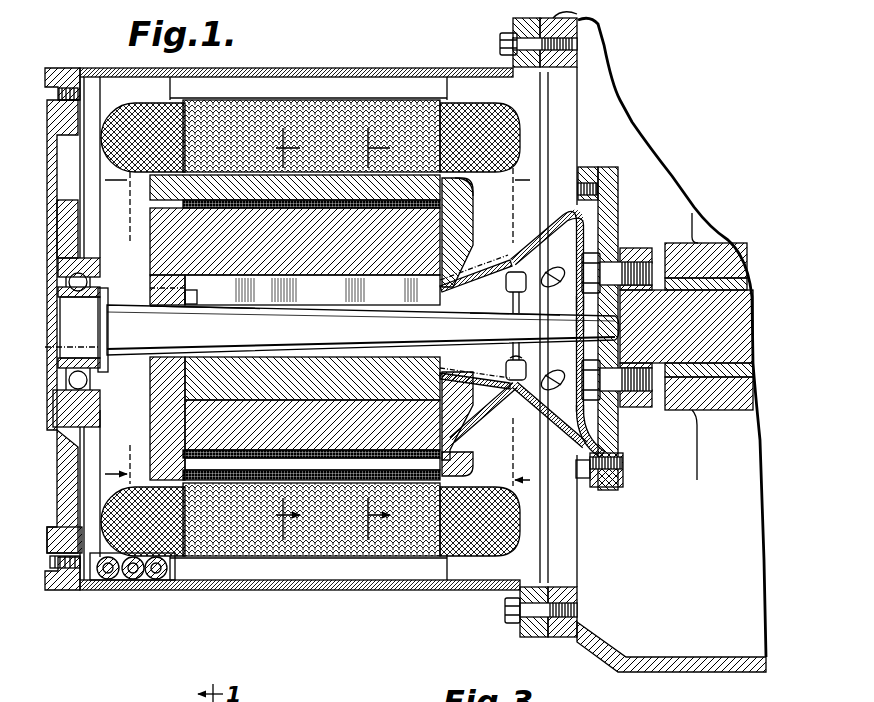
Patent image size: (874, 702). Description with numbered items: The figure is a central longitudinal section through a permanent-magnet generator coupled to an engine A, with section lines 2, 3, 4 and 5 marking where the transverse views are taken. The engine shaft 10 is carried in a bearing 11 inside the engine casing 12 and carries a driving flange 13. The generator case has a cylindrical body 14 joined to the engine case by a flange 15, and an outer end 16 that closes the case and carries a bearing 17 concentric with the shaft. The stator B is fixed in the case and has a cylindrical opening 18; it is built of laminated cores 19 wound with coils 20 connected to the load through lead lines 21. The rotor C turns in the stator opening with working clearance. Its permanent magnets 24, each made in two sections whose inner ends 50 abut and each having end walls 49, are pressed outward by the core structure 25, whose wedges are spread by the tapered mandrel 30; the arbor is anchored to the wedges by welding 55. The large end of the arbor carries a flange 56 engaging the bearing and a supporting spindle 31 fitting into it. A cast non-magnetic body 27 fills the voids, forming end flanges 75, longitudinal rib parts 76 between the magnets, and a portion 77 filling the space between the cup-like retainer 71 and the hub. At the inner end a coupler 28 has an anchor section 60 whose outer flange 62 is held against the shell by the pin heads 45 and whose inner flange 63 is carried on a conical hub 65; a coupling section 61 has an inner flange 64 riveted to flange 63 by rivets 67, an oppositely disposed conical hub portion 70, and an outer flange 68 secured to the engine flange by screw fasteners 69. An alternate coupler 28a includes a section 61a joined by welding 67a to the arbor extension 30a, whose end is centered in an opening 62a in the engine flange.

The engine shaft 10 is at (735, 303).
The bearing 11 is at (735, 397).
The engine casing 12 is at (593, 645).
The driving flange 13 is at (603, 322).
The cylindrical body 14 is at (333, 592).
The flange 15 is at (522, 632).
The outer end 16 is at (60, 541).
The bearing 17 is at (72, 405).
The cylindrical opening 18 is at (414, 180).
The laminated cores 19 is at (223, 545).
The coils 20 is at (487, 550).
The lead lines 21 is at (158, 583).
The permanent magnets 24 is at (388, 262).
The core structure 25 is at (363, 332).
The body of non-magnetic material 27 is at (175, 227).
The coupler 28 is at (557, 232).
The alternate coupler 28a is at (588, 334).
The tapered mandrel 30 is at (205, 319).
The arbor extension 30a is at (515, 323).
The supporting spindle 31 is at (75, 335).
The heads 45 is at (458, 480).
The end walls 49 is at (183, 258).
The inner ends 50 is at (314, 272).
The welding 55 is at (190, 300).
The flange 56 is at (104, 340).
The anchor section 60 is at (475, 232).
The coupling section 61 is at (512, 403).
The section 61a is at (616, 412).
The outer flange 62 is at (455, 455).
The opening 62a is at (598, 316).
The inner flange 63 is at (506, 372).
The inner flange 64 is at (528, 370).
The conical hub 65 is at (500, 378).
The rivets 67 is at (527, 280).
The welding 67a is at (590, 303).
The outer flange 68 is at (583, 488).
The screw fasteners 69 is at (583, 175).
The conical hub portion 70 is at (578, 433).
The cup-like retainer 71 is at (470, 283).
The end flanges 75 is at (462, 197).
The longitudinal rib parts 76 is at (195, 427).
The portion 77 is at (507, 272).
The line 2— 2 is at (117, 328).
The line 3— 3 is at (524, 320).
The line 4— 4 is at (277, 334).
The line 5— 5 is at (365, 334).
The engine A is at (648, 360).
The stator B is at (310, 329).
The rotor C is at (165, 403).